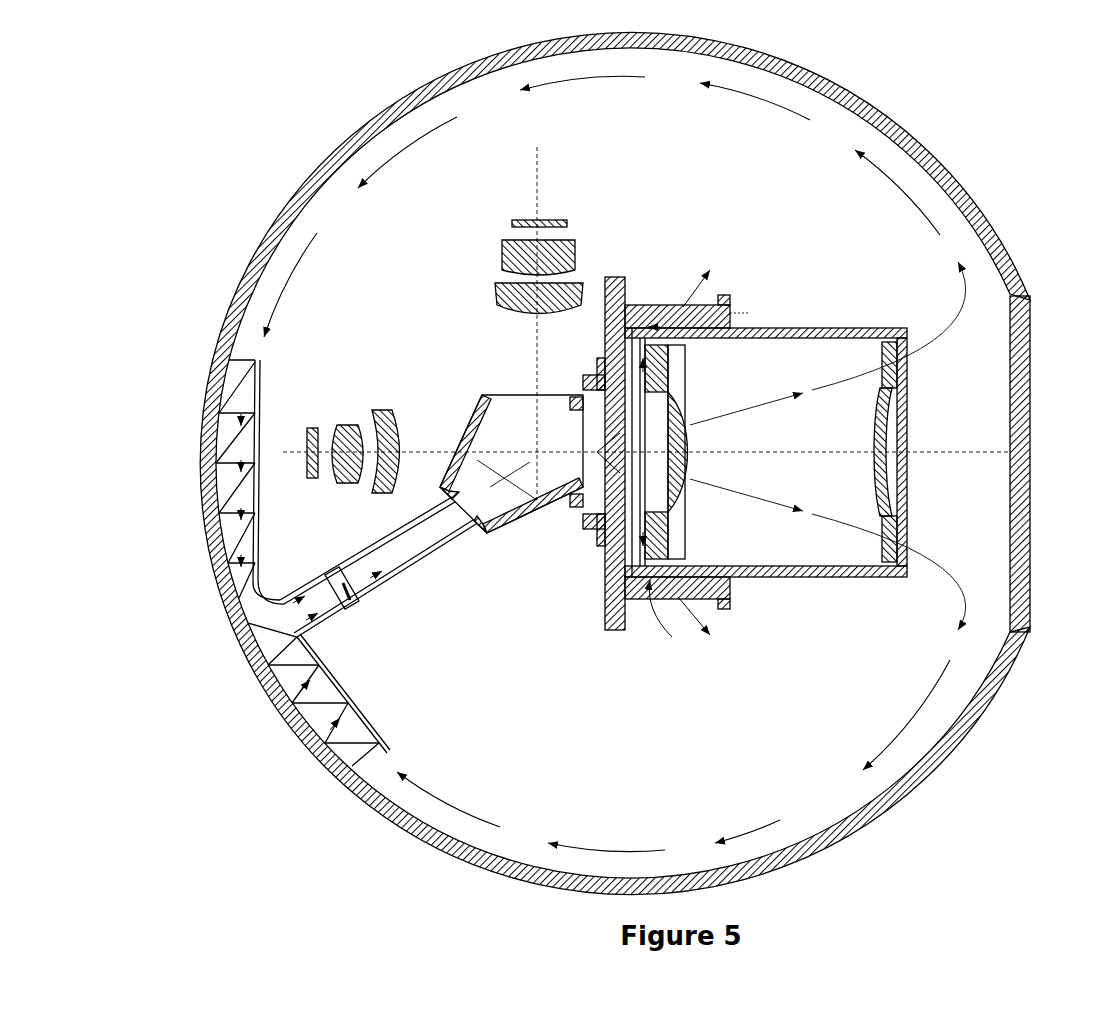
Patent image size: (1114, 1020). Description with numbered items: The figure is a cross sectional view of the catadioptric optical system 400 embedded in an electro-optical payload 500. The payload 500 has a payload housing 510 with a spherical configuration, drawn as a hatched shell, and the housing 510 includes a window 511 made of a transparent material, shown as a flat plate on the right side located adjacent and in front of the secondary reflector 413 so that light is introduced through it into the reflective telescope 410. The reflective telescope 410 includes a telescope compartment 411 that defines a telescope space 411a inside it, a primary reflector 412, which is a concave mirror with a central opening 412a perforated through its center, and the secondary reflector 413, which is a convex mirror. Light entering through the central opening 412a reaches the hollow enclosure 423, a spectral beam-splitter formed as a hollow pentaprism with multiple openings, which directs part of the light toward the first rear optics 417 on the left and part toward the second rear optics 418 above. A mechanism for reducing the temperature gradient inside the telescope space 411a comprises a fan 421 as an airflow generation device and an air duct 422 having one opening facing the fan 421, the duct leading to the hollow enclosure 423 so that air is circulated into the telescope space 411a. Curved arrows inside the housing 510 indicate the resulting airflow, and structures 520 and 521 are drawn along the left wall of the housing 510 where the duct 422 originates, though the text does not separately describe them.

The electro-optical payload 500 is at (645, 464).
The payload housing 510 is at (988, 696).
The window 511 is at (1018, 407).
The upper cooling channel with truss 520 is at (255, 615).
The lower cooling channel with truss 521 is at (303, 683).
The catadioptric optical system 400 is at (770, 419).
The reflective telescope 410 is at (770, 449).
The telescope compartment 411 is at (792, 327).
The telescope space 411a is at (840, 350).
The primary reflector 412 is at (675, 530).
The central opening 412a is at (670, 420).
The secondary reflector 413 is at (885, 478).
The first rear optics 417 is at (283, 418).
The second rear optics 418 is at (498, 208).
The fan 421 is at (345, 598).
The air duct 422 is at (430, 560).
The hollow enclosure 423 is at (515, 513).